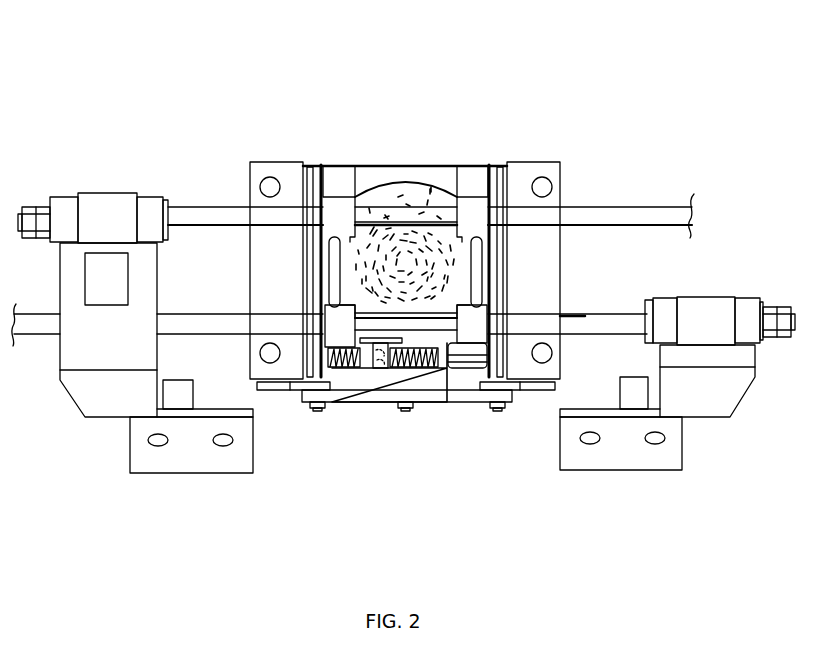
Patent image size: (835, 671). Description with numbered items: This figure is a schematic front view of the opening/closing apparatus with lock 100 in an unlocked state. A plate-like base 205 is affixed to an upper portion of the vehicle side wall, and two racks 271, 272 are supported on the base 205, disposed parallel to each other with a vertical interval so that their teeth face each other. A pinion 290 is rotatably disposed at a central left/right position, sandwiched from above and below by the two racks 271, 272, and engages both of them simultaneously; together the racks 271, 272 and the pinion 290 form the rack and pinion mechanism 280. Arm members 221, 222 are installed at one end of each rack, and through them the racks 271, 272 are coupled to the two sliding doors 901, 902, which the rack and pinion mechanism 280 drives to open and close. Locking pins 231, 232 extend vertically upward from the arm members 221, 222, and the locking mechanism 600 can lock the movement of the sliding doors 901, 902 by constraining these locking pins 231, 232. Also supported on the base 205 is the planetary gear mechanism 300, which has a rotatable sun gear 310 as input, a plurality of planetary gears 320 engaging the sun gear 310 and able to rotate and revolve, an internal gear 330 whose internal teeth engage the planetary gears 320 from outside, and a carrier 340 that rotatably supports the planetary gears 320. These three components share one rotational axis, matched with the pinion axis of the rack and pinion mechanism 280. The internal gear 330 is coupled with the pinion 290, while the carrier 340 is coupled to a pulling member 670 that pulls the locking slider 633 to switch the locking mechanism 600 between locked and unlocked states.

The opening/closing apparatus with lock 100 is at (526, 66).
The base 205 is at (287, 162).
The rack 271 is at (625, 203).
The rack 272 is at (190, 313).
The arm member 221 is at (87, 420).
The arm member 222 is at (730, 417).
The locking pin 231 is at (193, 397).
The locking pin 232 is at (618, 388).
The sliding door 901 is at (191, 483).
The sliding door 902 is at (617, 483).
The internal gear 330 is at (307, 250).
The rack and pinion mechanism 280 is at (418, 216).
The carrier 340 is at (383, 212).
The planetary gears 320 is at (352, 205).
The sun gear 310 is at (393, 250).
The pinion 290 is at (462, 297).
The planetary gear mechanism 300 is at (392, 296).
The pulling member 670 is at (380, 368).
The locking slider 633 is at (403, 390).
The locking mechanism 600 is at (458, 388).